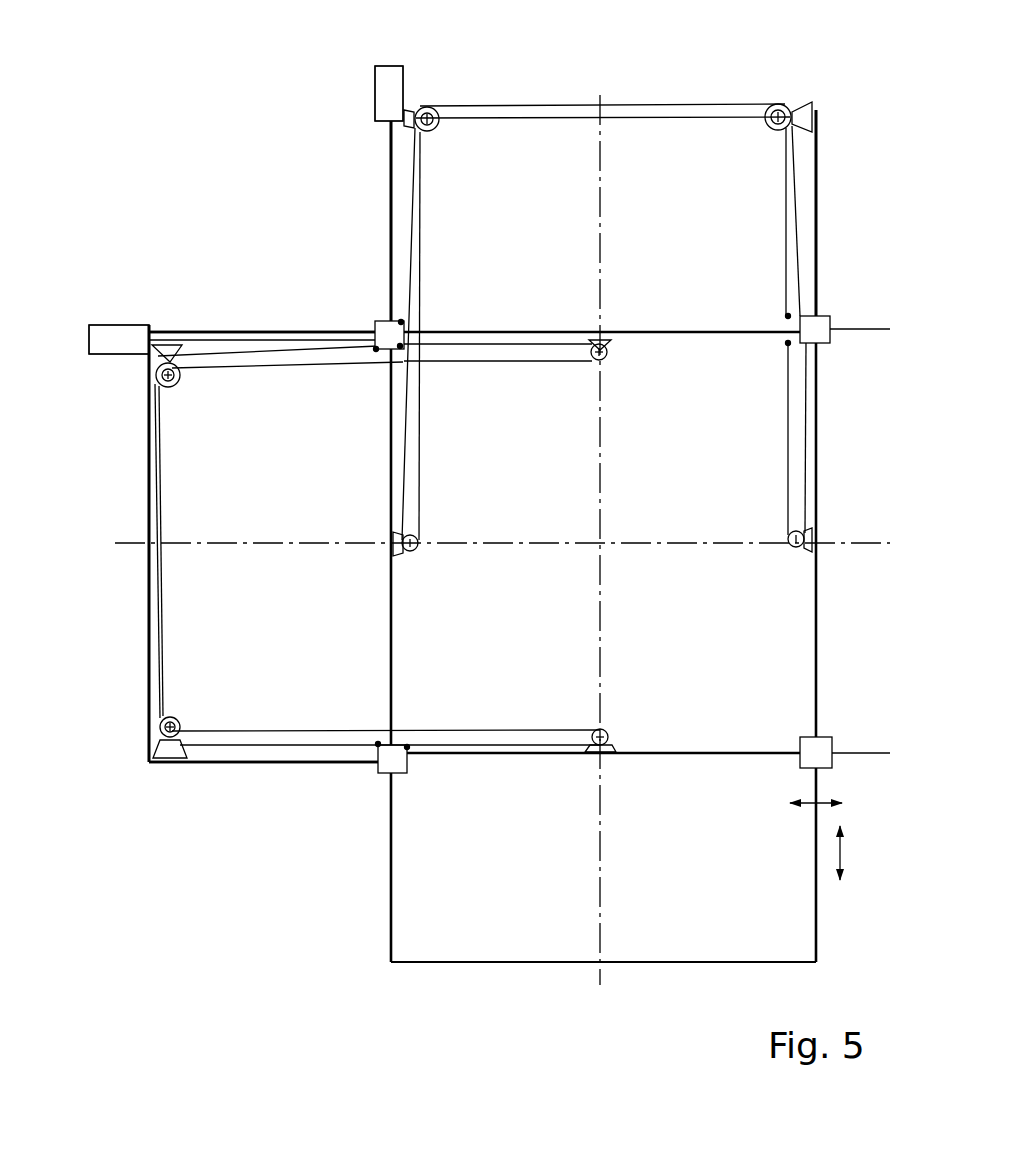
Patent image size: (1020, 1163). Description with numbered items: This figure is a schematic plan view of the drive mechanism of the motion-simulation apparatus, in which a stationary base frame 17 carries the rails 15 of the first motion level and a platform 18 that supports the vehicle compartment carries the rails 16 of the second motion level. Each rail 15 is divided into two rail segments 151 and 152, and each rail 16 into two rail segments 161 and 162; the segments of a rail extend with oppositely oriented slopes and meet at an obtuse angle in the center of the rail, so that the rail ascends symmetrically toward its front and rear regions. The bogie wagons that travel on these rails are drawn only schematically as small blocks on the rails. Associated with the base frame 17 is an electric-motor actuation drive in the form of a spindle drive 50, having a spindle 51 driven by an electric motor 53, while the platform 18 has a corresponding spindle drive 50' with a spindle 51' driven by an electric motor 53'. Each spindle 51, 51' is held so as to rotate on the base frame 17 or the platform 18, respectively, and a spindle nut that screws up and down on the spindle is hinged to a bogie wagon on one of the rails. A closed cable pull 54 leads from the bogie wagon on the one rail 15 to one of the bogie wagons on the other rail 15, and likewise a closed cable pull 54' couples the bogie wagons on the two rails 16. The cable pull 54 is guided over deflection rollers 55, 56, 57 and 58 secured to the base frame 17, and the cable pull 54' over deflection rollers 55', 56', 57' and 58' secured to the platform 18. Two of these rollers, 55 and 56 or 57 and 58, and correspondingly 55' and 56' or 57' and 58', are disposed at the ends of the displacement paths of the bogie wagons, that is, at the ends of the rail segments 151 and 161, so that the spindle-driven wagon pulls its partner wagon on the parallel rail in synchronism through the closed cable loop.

The rail 15 is at (266, 328).
The rail segment 151 is at (190, 334).
The rail segment 152 is at (862, 328).
The rail 16 is at (823, 650).
The rail segment 161 is at (392, 930).
The rail segment 162 is at (820, 197).
The base frame 17 is at (146, 632).
The platform 18 is at (555, 968).
The spindle drive 50 is at (111, 296).
The spindle drive 50' is at (343, 107).
The spindle 51 is at (379, 545).
The spindle 51' is at (597, 210).
The electric motor 53 is at (102, 377).
The electric motor 53' is at (343, 89).
The closed cable pull 54 is at (213, 543).
The closed cable pull 54' is at (604, 334).
The deflection roller 55 is at (538, 382).
The deflection roller 55' is at (452, 563).
The deflection roller 56 is at (119, 407).
The deflection roller 56' is at (436, 75).
The deflection roller 57 is at (122, 728).
The deflection roller 57' is at (779, 74).
The deflection roller 58 is at (628, 706).
The deflection roller 58' is at (852, 561).